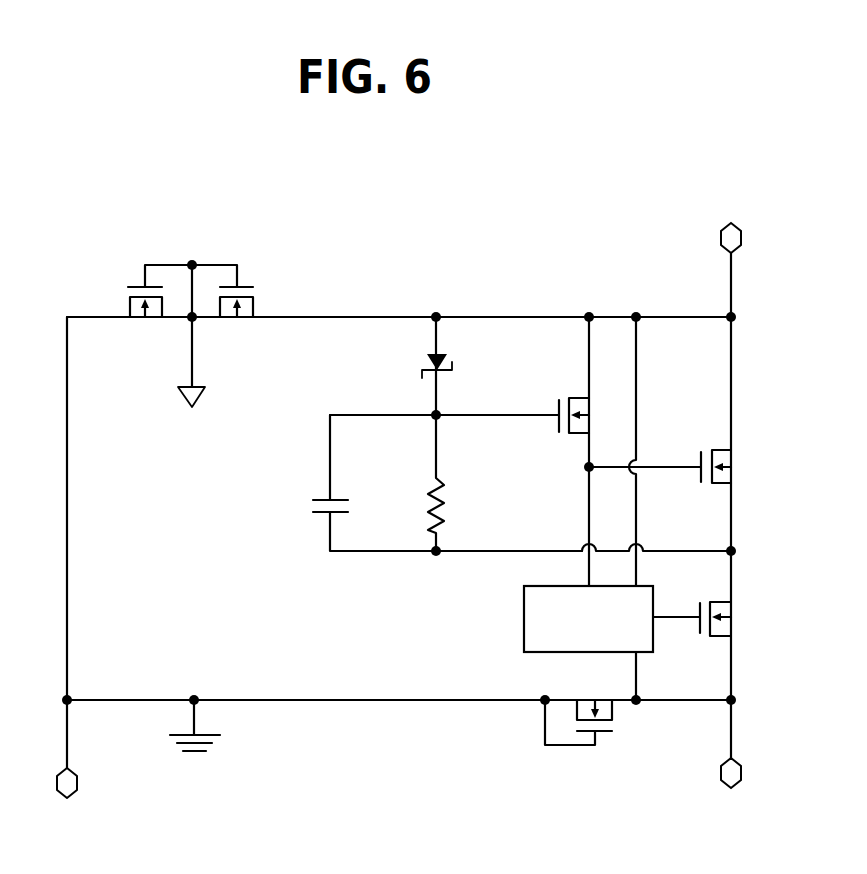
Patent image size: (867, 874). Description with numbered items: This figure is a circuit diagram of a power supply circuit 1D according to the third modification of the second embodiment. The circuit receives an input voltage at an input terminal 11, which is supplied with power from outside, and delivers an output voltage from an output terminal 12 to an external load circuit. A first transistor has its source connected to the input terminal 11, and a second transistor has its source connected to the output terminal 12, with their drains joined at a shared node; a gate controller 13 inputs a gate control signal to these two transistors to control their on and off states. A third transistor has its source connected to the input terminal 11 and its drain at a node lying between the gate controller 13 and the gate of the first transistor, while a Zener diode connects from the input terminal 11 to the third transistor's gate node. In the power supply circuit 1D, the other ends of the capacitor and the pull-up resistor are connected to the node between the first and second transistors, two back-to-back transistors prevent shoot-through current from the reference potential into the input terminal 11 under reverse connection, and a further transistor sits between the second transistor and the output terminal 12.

The power supply circuit 1D is at (495, 199).
The input terminal 11 is at (741, 240).
The output terminal 12 is at (741, 773).
The gate controller 13 is at (524, 615).